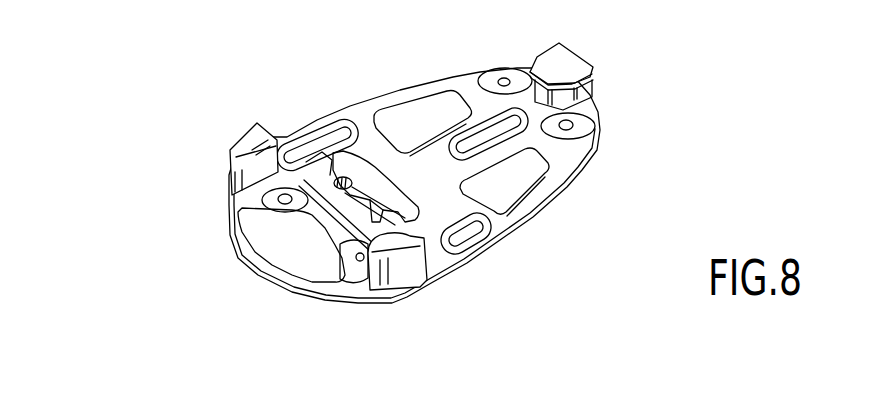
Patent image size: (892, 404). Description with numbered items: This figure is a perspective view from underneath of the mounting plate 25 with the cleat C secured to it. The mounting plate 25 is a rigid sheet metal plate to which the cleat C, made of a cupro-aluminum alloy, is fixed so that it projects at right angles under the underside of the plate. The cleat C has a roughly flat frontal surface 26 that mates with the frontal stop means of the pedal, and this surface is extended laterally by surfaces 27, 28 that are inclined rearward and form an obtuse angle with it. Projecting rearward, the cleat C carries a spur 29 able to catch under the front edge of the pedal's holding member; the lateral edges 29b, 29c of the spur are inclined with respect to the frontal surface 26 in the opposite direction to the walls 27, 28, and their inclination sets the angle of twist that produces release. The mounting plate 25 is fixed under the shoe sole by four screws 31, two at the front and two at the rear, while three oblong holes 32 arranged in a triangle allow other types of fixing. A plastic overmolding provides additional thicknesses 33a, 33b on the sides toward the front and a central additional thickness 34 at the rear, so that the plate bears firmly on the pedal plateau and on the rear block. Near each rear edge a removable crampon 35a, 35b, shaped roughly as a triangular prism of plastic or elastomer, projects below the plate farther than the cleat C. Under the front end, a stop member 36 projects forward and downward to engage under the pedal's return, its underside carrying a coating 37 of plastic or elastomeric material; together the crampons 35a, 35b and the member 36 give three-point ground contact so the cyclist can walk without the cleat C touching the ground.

The mounting plate 25 is at (513, 222).
The frontal surface 26 is at (388, 160).
The inclined lateral surface 27 is at (450, 262).
The inclined lateral surface 28 is at (317, 150).
The spur 29 is at (333, 215).
The lateral edge of the spur 29b is at (336, 186).
The lateral edge of the spur 29c is at (358, 284).
The screws 31 is at (262, 198).
The oblong holes 32 is at (307, 133).
The additional thickness 33a is at (527, 173).
The additional thickness 33b is at (430, 112).
The central additional thickness 34 is at (277, 241).
The crampon 35a is at (397, 273).
The crampon 35b is at (250, 143).
The stop member 36 is at (603, 99).
The coating 37 is at (566, 66).
The cleat C is at (336, 150).